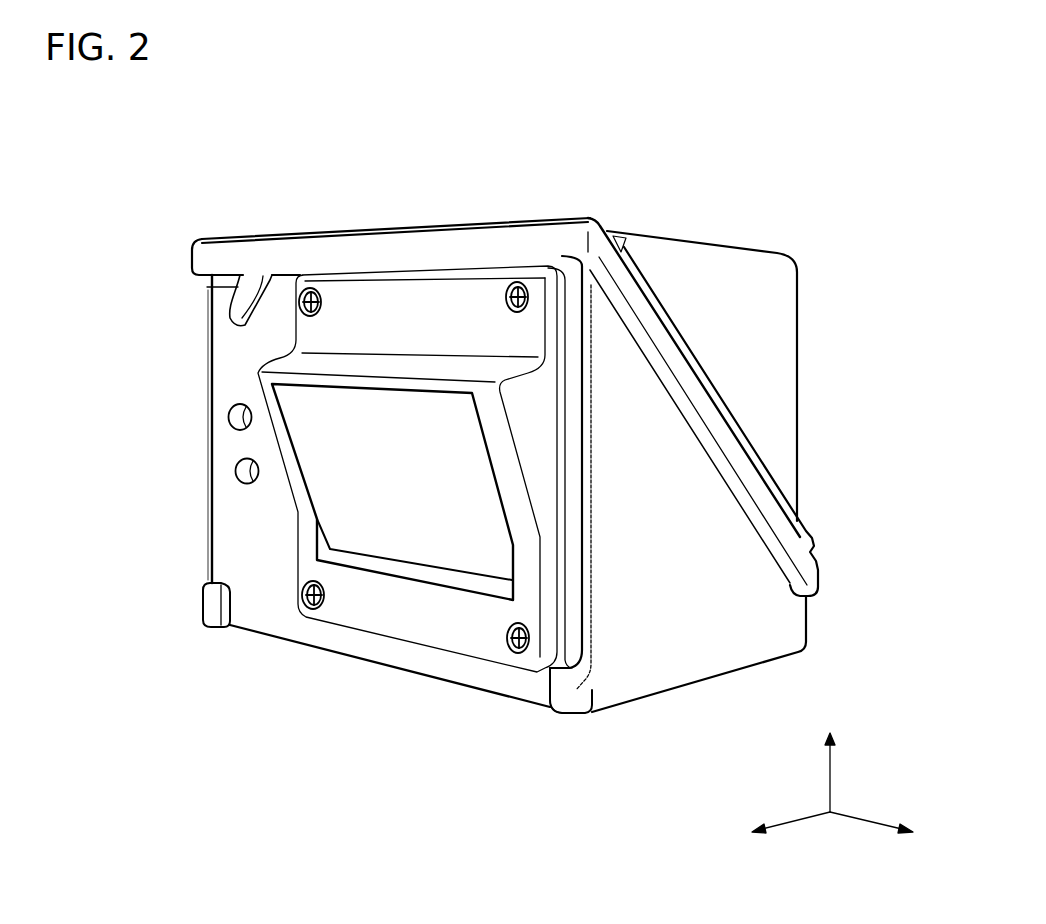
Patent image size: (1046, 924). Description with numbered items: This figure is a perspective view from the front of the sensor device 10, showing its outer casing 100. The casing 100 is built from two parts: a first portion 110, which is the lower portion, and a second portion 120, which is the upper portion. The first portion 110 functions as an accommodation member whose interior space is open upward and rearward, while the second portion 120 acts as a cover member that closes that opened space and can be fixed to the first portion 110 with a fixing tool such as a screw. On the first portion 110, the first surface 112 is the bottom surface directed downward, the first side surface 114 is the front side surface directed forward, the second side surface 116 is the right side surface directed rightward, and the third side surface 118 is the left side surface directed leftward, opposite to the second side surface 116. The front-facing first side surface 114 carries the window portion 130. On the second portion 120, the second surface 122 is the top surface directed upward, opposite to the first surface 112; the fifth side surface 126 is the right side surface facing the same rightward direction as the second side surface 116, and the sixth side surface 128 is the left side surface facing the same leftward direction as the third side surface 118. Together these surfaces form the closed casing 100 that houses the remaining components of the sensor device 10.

The sensor device 10 is at (908, 79).
The casing 100 is at (892, 384).
The first portion 110 is at (708, 563).
The first surface 112 is at (413, 668).
The first side surface 114 is at (232, 353).
The second side surface 116 is at (667, 624).
The third side surface 118 is at (208, 455).
The second portion 120 is at (750, 364).
The second surface 122 is at (737, 250).
The fifth side surface 126 is at (694, 296).
The sixth side surface 128 is at (182, 444).
The window portion 130 is at (343, 472).